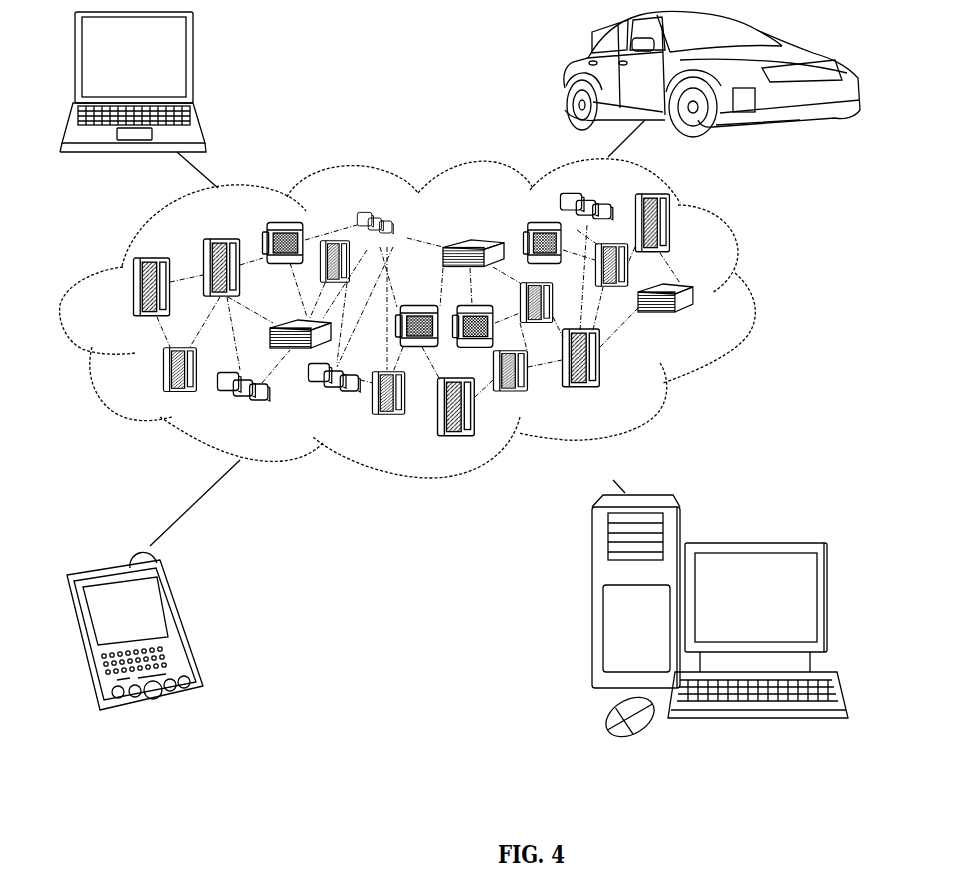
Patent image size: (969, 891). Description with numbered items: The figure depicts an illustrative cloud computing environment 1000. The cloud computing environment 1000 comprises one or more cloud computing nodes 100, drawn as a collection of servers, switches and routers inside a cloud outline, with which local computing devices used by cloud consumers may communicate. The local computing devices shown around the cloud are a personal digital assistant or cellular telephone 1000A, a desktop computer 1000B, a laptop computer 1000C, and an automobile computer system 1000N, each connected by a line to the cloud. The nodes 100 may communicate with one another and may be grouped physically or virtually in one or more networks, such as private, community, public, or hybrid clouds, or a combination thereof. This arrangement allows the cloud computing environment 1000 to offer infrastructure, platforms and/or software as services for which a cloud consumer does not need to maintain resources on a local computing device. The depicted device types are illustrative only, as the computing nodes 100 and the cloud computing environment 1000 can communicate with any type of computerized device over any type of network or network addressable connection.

The laptop computer 1000C is at (193, 63).
The automobile computer system 1000N is at (565, 79).
The cloud computing environment 1000 is at (755, 298).
The cloud computing nodes 100 is at (703, 321).
The personal digital assistant or cellular telephone 1000A is at (185, 623).
The desktop computer 1000B is at (765, 520).